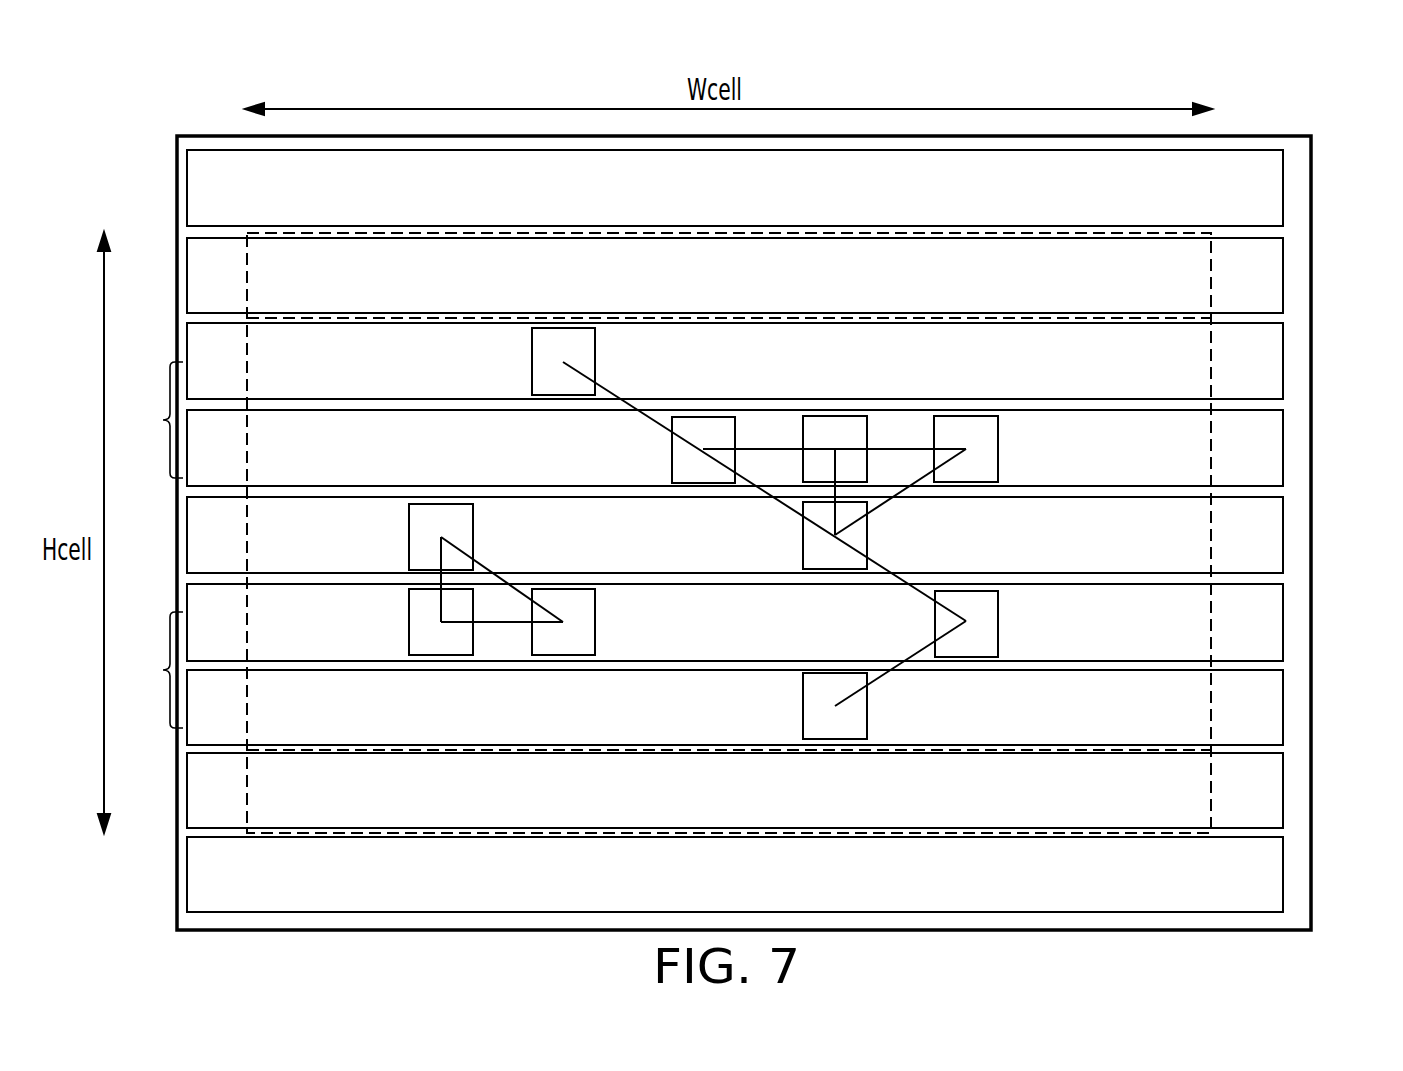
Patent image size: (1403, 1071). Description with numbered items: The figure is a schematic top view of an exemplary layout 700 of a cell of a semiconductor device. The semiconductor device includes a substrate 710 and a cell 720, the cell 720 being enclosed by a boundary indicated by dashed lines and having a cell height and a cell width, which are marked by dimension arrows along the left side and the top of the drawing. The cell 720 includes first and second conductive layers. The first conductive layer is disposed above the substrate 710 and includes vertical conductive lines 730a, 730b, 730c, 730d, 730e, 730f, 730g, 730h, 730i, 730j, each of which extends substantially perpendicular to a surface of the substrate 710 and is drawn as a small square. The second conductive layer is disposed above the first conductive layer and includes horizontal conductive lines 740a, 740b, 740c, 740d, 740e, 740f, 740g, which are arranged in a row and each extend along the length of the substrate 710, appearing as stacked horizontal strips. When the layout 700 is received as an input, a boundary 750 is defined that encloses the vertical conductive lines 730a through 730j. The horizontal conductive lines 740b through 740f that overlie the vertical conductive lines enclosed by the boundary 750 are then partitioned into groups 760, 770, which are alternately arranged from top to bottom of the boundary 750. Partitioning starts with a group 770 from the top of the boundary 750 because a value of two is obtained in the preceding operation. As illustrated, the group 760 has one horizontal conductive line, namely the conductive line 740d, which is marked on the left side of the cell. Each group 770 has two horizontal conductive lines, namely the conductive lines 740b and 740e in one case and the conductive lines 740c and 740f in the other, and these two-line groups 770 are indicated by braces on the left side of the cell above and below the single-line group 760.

The layout 700 is at (215, 97).
The substrate 710 is at (1311, 185).
The cell 720 is at (828, 233).
The vertical conductive line 730a is at (532, 358).
The vertical conductive line 730b is at (672, 448).
The vertical conductive line 730c is at (836, 416).
The vertical conductive line 730d is at (998, 449).
The vertical conductive line 730e is at (409, 537).
The vertical conductive line 730f is at (803, 535).
The vertical conductive line 730g is at (409, 622).
The vertical conductive line 730h is at (595, 625).
The vertical conductive line 730i is at (998, 626).
The vertical conductive line 730j is at (803, 706).
The horizontal conductive line 740a is at (1283, 276).
The horizontal conductive line 740b is at (1283, 365).
The horizontal conductive line 740c is at (1283, 441).
The horizontal conductive line 740d is at (1283, 530).
The horizontal conductive line 740e is at (1283, 617).
The horizontal conductive line 740f is at (1283, 700).
The horizontal conductive line 740g is at (1283, 786).
The boundary 750 is at (605, 318).
The group 760 is at (756, 535).
The group 770 is at (150, 545).